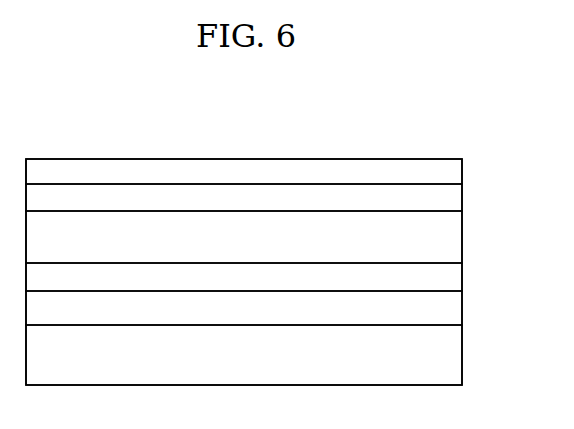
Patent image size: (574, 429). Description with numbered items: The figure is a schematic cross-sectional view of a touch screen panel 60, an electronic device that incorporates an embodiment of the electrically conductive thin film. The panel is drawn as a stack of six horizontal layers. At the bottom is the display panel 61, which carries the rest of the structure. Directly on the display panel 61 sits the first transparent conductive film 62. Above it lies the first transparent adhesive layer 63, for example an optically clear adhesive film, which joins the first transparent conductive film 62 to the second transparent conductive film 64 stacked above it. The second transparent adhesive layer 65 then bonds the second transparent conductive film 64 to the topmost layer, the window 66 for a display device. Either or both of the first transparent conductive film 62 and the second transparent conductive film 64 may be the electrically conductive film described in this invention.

The touch screen panel 60 is at (366, 146).
The display panel 61 is at (463, 360).
The first transparent conductive film 62 is at (463, 311).
The first transparent adhesive layer 63 is at (463, 281).
The second transparent conductive film 64 is at (463, 236).
The second transparent adhesive layer 65 is at (463, 201).
The window 66 is at (463, 171).